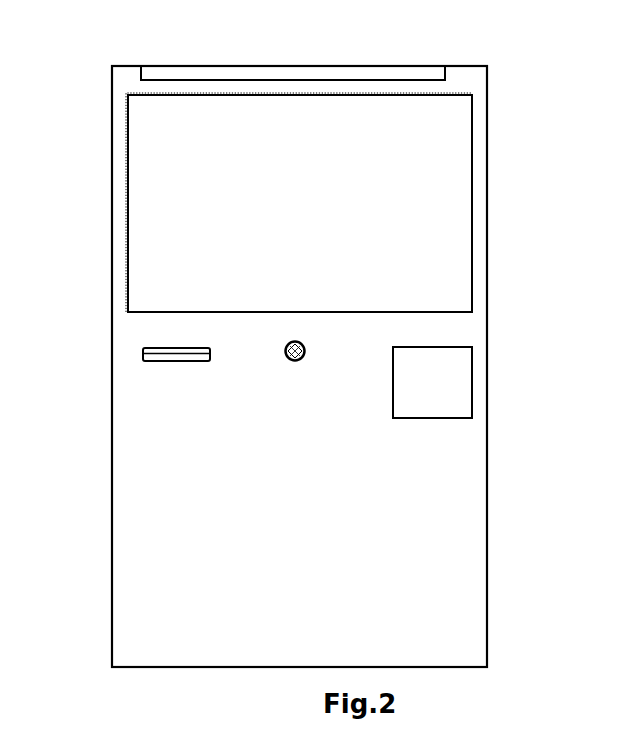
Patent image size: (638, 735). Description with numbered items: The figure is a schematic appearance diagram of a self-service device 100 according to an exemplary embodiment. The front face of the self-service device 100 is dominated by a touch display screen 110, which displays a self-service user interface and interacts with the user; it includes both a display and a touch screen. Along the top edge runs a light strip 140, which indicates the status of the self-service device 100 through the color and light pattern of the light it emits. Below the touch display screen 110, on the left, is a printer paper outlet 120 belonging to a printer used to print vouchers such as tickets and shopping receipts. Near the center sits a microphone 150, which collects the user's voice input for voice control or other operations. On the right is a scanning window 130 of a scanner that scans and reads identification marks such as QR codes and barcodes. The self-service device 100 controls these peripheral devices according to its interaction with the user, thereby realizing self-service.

The self-service device 100 is at (487, 102).
The touch display screen 110 is at (447, 215).
The printer paper outlet 120 is at (143, 352).
The scanning window 130 is at (445, 383).
The light strip 140 is at (360, 70).
The microphone 150 is at (307, 347).